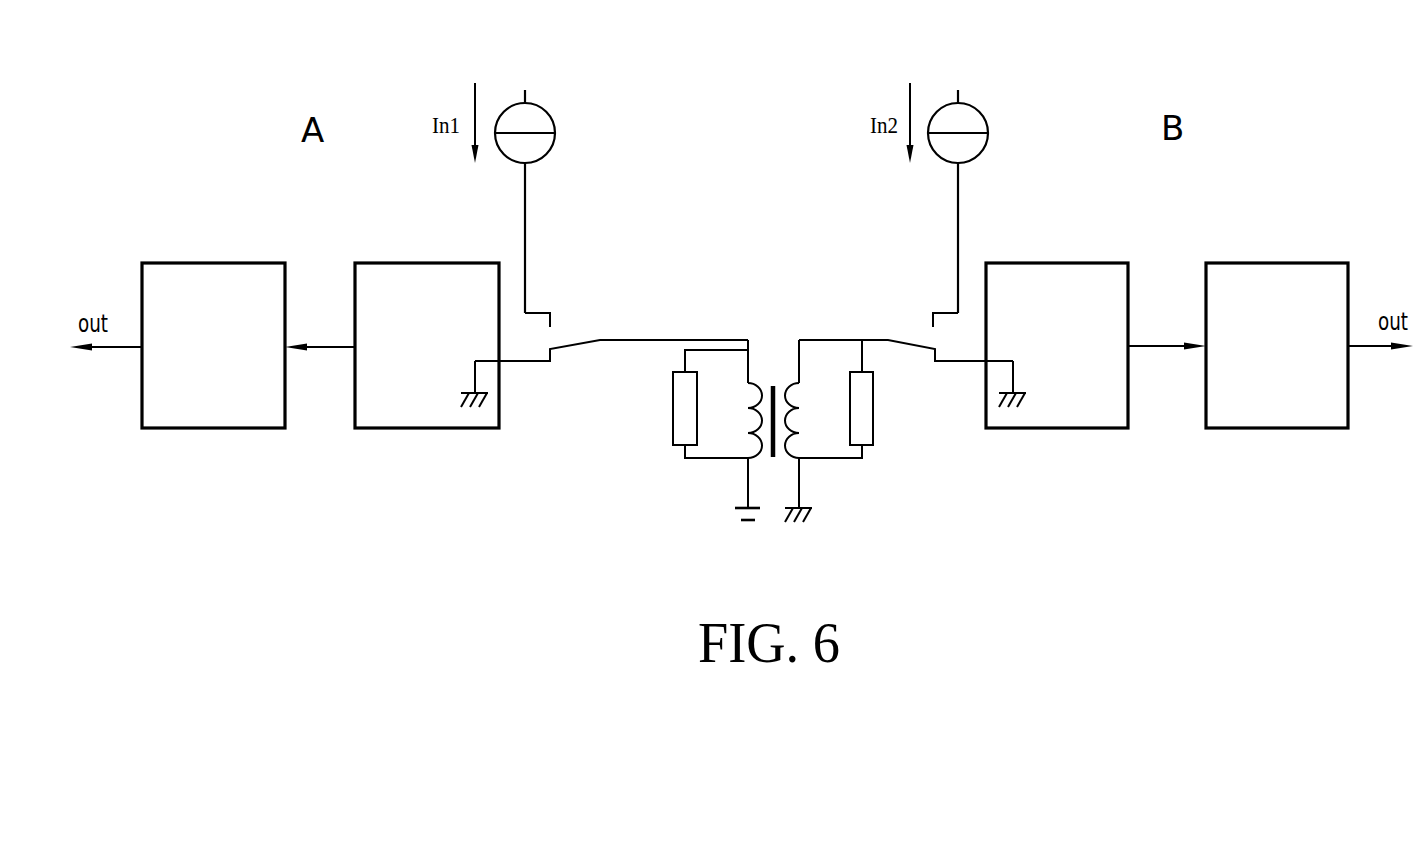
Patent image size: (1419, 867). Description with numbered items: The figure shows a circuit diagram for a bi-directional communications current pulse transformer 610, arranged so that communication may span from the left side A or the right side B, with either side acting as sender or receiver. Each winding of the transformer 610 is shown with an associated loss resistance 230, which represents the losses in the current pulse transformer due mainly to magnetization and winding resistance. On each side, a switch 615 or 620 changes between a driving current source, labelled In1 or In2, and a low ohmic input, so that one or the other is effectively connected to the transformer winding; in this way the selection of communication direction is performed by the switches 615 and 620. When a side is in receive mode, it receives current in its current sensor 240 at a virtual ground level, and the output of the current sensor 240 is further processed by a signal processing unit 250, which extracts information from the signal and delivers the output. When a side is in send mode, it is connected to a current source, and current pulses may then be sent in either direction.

The loss resistance 230 is at (670, 434).
The current sensor 240 is at (452, 355).
The signal processing unit 250 is at (237, 355).
The bi-directional communications current pulse transformer 610 is at (770, 322).
The switch 615 is at (572, 318).
The switch 620 is at (923, 333).